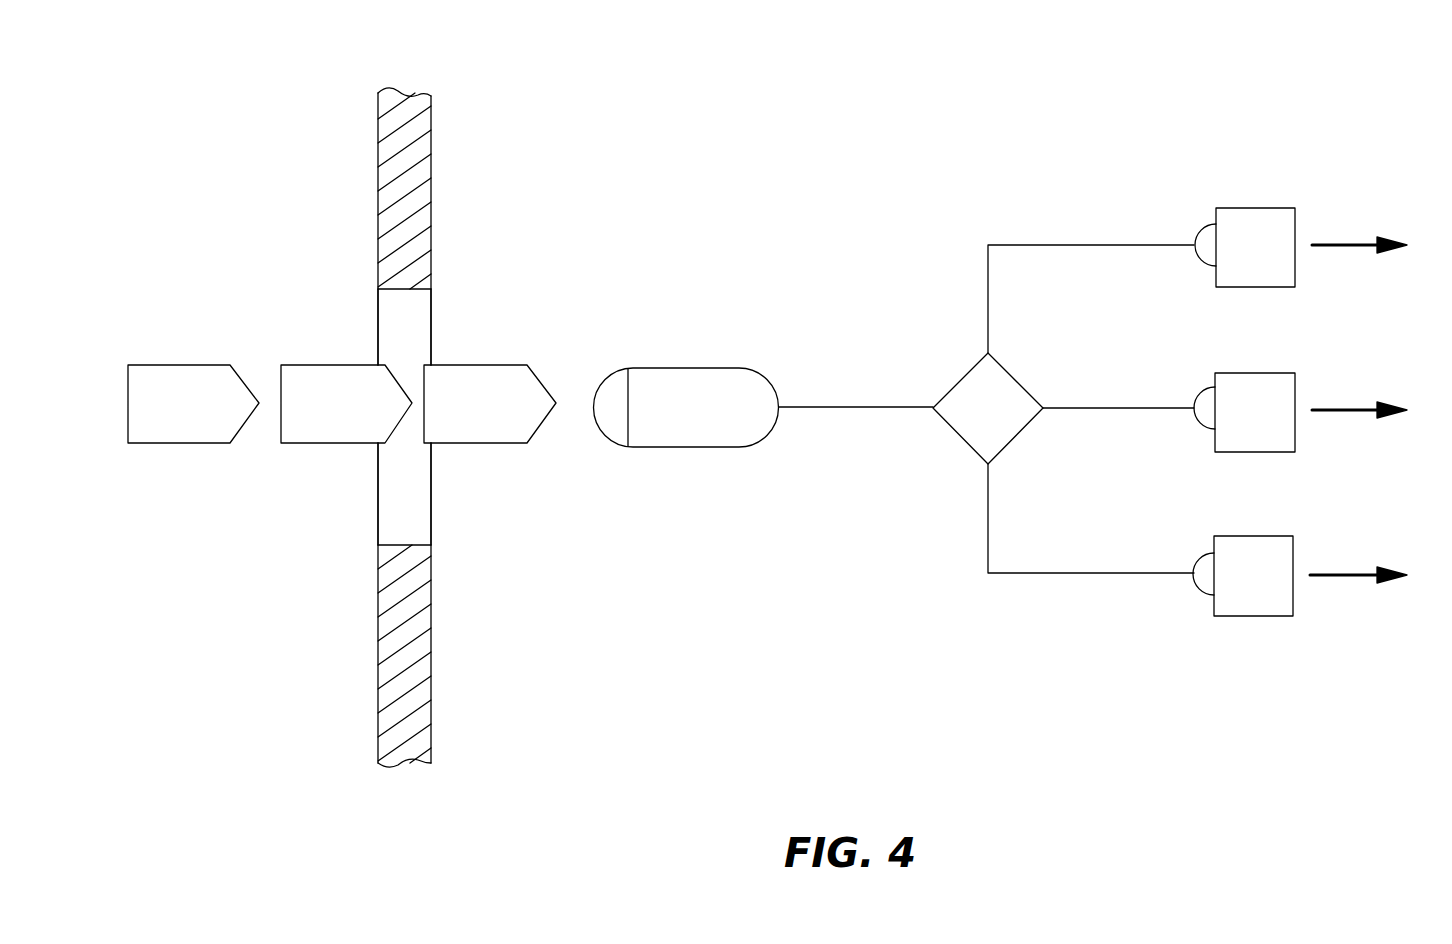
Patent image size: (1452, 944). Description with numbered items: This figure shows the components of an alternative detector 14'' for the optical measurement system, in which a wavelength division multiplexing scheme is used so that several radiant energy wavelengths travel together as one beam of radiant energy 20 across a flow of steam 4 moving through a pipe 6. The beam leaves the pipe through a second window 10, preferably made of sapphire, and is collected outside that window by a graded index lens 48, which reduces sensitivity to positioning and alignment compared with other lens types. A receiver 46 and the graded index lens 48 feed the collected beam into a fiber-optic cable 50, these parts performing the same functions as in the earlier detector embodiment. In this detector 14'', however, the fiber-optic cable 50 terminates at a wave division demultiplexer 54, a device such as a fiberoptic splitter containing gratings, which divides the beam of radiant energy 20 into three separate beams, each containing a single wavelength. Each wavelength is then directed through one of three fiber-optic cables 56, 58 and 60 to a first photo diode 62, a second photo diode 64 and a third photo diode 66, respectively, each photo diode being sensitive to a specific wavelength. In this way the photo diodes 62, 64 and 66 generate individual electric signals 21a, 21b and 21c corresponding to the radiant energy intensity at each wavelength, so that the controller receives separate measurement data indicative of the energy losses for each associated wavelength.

The flow of steam 4 is at (236, 267).
The pipe 6 is at (431, 633).
The second window 10 is at (431, 333).
The beam of radiant energy 20 is at (493, 447).
The detector 14'' is at (1022, 368).
The receiver 46 is at (704, 447).
The graded index lens 48 is at (615, 370).
The fiber-optic cable 50 is at (830, 407).
The wave division demultiplexer 54 is at (960, 442).
The fiber-optic cable 56 is at (988, 312).
The fiber-optic cable 58 is at (1115, 408).
The fiber-optic cable 60 is at (1025, 573).
The first photo diode 62 is at (1257, 208).
The second photo diode 64 is at (1252, 373).
The third photo diode 66 is at (1250, 616).
The electric signal 21a is at (1353, 245).
The electric signal 21b is at (1355, 410).
The electric signal 21c is at (1352, 575).